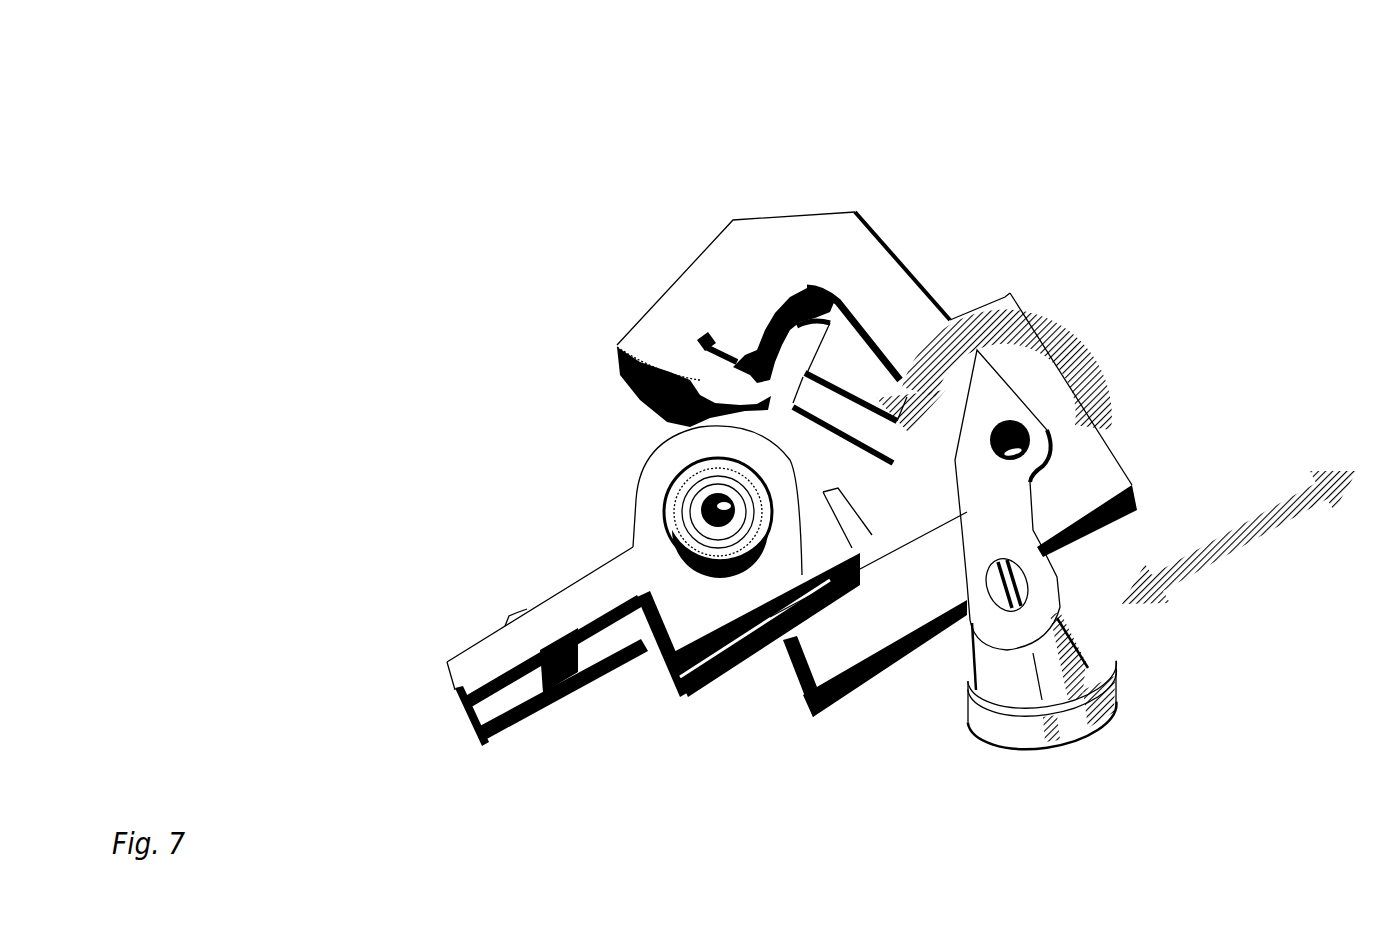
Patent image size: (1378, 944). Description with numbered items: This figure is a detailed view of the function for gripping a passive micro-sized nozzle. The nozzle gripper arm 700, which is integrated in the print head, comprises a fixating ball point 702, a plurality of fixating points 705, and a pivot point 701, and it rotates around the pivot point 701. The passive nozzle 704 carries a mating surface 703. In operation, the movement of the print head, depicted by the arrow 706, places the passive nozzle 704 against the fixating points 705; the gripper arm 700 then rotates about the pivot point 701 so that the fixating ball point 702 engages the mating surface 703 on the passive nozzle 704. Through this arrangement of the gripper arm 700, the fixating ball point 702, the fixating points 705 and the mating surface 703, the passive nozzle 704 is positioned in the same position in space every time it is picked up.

The nozzle gripper arm 700 is at (668, 178).
The pivot point 701 is at (1030, 430).
The fixating ball point 702 is at (617, 345).
The mating surface 703 is at (667, 467).
The passive nozzle 704 is at (670, 655).
The fixating points 705 is at (865, 540).
The arrow 706 is at (1238, 568).